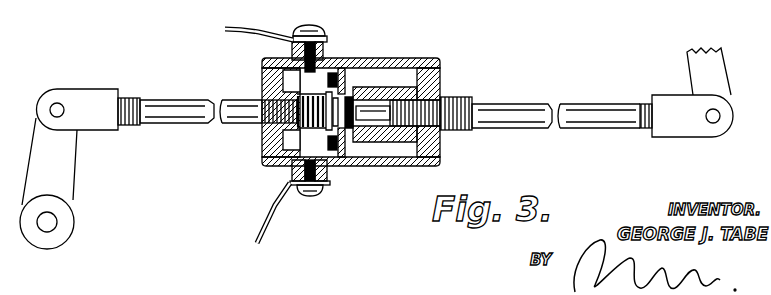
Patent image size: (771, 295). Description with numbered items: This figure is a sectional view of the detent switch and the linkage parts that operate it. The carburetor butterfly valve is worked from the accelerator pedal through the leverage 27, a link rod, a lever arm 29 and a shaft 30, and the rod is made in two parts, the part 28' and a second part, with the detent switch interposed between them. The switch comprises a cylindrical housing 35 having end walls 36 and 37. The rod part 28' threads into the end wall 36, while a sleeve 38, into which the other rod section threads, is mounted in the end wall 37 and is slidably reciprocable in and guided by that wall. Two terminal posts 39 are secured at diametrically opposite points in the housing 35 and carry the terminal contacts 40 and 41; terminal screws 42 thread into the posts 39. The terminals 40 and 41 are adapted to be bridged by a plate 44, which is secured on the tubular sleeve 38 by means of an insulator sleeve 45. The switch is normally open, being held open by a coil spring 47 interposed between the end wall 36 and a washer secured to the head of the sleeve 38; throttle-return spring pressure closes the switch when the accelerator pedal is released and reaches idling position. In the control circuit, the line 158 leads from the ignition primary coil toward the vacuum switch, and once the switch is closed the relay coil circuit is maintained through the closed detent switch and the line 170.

The leverage 27 is at (712, 75).
The rod part 28' is at (190, 94).
The lever arm 29 is at (68, 144).
The shaft 30 is at (46, 225).
The cylindrical housing 35 is at (380, 62).
The end wall 36 is at (268, 143).
The end wall 37 is at (443, 80).
The sleeve 38 is at (400, 143).
The terminal posts 39 is at (324, 50).
The terminal contact 40 is at (343, 67).
The terminal contact 41 is at (336, 150).
The terminal screws 42 is at (316, 27).
The plate 44 is at (353, 143).
The insulator sleeve 45 is at (350, 87).
The coil spring 47 is at (285, 96).
The line 158 is at (274, 213).
The line 170 is at (262, 31).